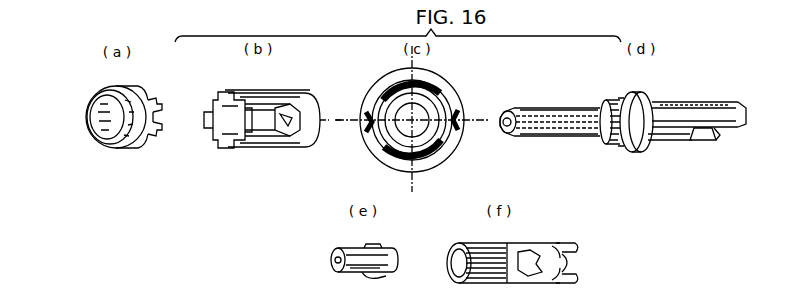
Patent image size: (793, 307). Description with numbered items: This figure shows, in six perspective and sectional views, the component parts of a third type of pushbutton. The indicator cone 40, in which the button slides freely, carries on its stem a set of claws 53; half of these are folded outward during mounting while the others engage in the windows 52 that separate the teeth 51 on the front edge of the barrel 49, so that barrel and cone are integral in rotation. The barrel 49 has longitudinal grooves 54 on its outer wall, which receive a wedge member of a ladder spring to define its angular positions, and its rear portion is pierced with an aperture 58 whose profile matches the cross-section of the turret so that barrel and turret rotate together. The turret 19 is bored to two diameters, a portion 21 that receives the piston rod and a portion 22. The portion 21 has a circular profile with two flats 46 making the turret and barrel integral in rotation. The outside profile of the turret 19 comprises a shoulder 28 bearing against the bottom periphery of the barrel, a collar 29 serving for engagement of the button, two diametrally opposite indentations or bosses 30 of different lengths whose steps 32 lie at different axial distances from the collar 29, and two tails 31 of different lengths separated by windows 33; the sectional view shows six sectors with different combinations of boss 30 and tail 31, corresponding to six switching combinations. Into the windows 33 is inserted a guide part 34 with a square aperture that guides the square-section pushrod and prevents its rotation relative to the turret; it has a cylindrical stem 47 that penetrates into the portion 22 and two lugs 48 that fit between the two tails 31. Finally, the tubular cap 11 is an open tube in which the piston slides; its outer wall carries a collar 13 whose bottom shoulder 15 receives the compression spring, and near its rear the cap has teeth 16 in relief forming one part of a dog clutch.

The cone 40 is at (127, 146).
The claws 53 is at (157, 142).
The barrel 49 is at (307, 148).
The longitudinal grooves 54 is at (262, 93).
The teeth 51 is at (210, 128).
The windows 52 is at (220, 140).
The aperture 58 is at (282, 132).
The turret 19 is at (466, 80).
The indentations or bosses 30 is at (396, 82).
The tails 31 is at (456, 116).
The portion of the turret 21 is at (560, 137).
The flats 46 is at (540, 108).
The shoulder 28 is at (608, 100).
The collar 29 is at (620, 148).
The portion of the turret 22 is at (712, 102).
The shoulders or steps 32 is at (678, 104).
The windows 33 is at (704, 140).
The guide part 34 is at (392, 254).
The cylindrical stem 47 is at (364, 270).
The lugs 48 is at (380, 278).
The tubular cap 11 is at (505, 243).
The teeth 16 is at (536, 258).
The collar 13 is at (570, 244).
The bottom shoulder 15 is at (570, 263).